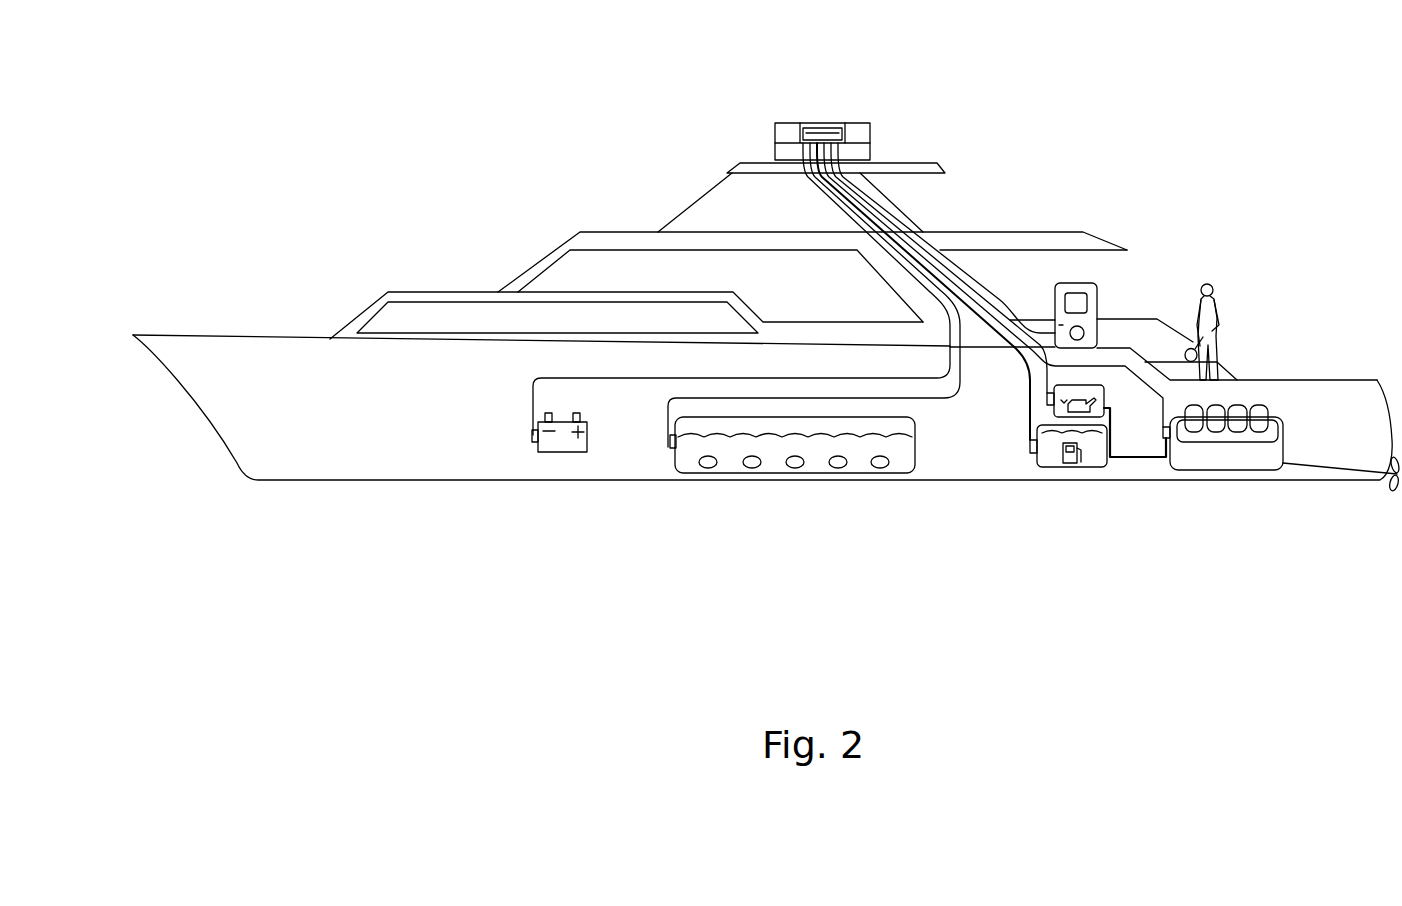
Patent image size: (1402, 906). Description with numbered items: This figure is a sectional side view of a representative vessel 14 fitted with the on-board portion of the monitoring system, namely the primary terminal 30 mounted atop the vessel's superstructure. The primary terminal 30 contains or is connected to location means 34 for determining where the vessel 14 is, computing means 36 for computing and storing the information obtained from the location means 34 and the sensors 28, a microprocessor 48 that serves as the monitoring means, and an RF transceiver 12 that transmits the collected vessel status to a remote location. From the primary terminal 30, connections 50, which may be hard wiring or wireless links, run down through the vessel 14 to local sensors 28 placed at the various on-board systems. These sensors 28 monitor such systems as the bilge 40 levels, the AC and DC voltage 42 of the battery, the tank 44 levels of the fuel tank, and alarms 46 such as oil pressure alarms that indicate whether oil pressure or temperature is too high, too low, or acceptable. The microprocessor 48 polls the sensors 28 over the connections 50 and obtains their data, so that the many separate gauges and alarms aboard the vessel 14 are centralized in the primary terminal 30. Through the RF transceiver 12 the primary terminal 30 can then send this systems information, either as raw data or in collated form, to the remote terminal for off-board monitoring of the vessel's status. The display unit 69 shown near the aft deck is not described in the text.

The RF transceiver 12 is at (780, 135).
The vessel 14 is at (458, 293).
The sensors 28 is at (532, 437).
The primary terminal 30 is at (693, 87).
The location means 34 is at (867, 132).
The computing means 36 is at (830, 127).
The bilge 40 is at (775, 474).
The AC and DC voltage 42 is at (557, 452).
The tank 44 is at (1057, 467).
The alarms 46 is at (1090, 385).
The microprocessor 48 is at (818, 133).
The connections 50 is at (928, 250).
The display unit 69 is at (1078, 283).